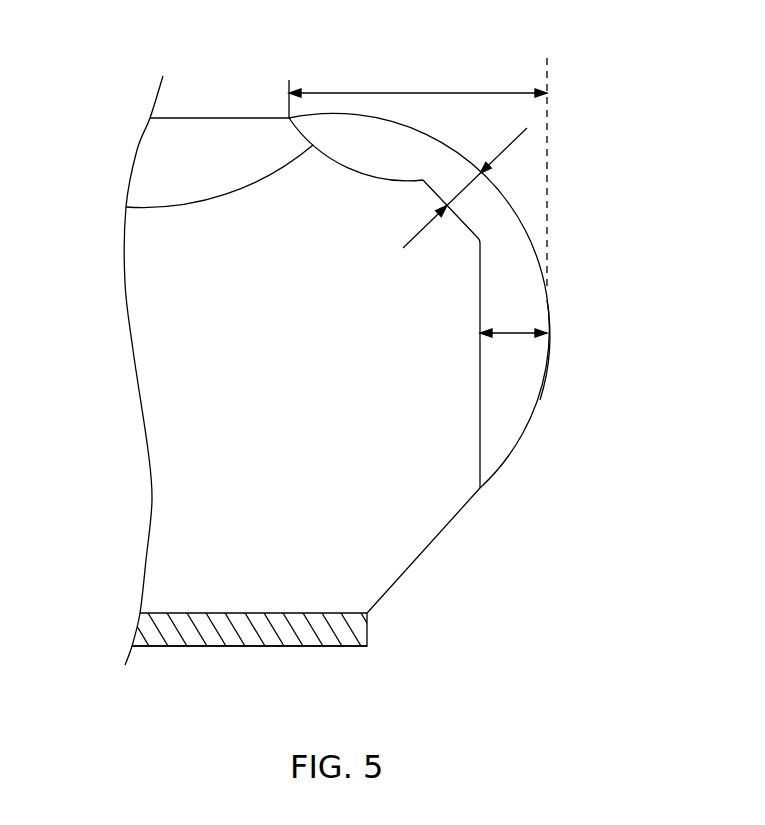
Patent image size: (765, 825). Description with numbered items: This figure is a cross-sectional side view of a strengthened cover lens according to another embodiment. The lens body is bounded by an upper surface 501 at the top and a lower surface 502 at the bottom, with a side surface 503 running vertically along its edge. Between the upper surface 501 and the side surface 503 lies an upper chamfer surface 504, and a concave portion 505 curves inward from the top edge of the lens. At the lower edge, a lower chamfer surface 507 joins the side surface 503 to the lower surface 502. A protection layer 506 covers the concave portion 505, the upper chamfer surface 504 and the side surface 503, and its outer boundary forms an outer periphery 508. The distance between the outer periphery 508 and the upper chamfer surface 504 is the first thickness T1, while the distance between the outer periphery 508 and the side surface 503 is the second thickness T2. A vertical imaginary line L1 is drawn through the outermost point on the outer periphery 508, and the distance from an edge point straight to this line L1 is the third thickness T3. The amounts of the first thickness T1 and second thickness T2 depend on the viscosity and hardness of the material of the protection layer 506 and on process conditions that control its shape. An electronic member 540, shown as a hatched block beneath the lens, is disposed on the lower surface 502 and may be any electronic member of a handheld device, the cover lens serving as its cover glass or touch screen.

The upper surface 501 is at (213, 118).
The lower surface 502 is at (303, 618).
The side surface 503 is at (480, 460).
The upper chamfer surface 504 is at (472, 232).
The concave portion 505 is at (126, 207).
The protection layer 506 is at (525, 403).
The lower chamfer surface 507 is at (420, 553).
The outer periphery 508 is at (545, 363).
The electronic member 540 is at (198, 648).
The first thickness T1 is at (462, 189).
The second thickness T2 is at (517, 327).
The third thickness T3 is at (418, 85).
The vertical imaginary line L1 is at (549, 152).